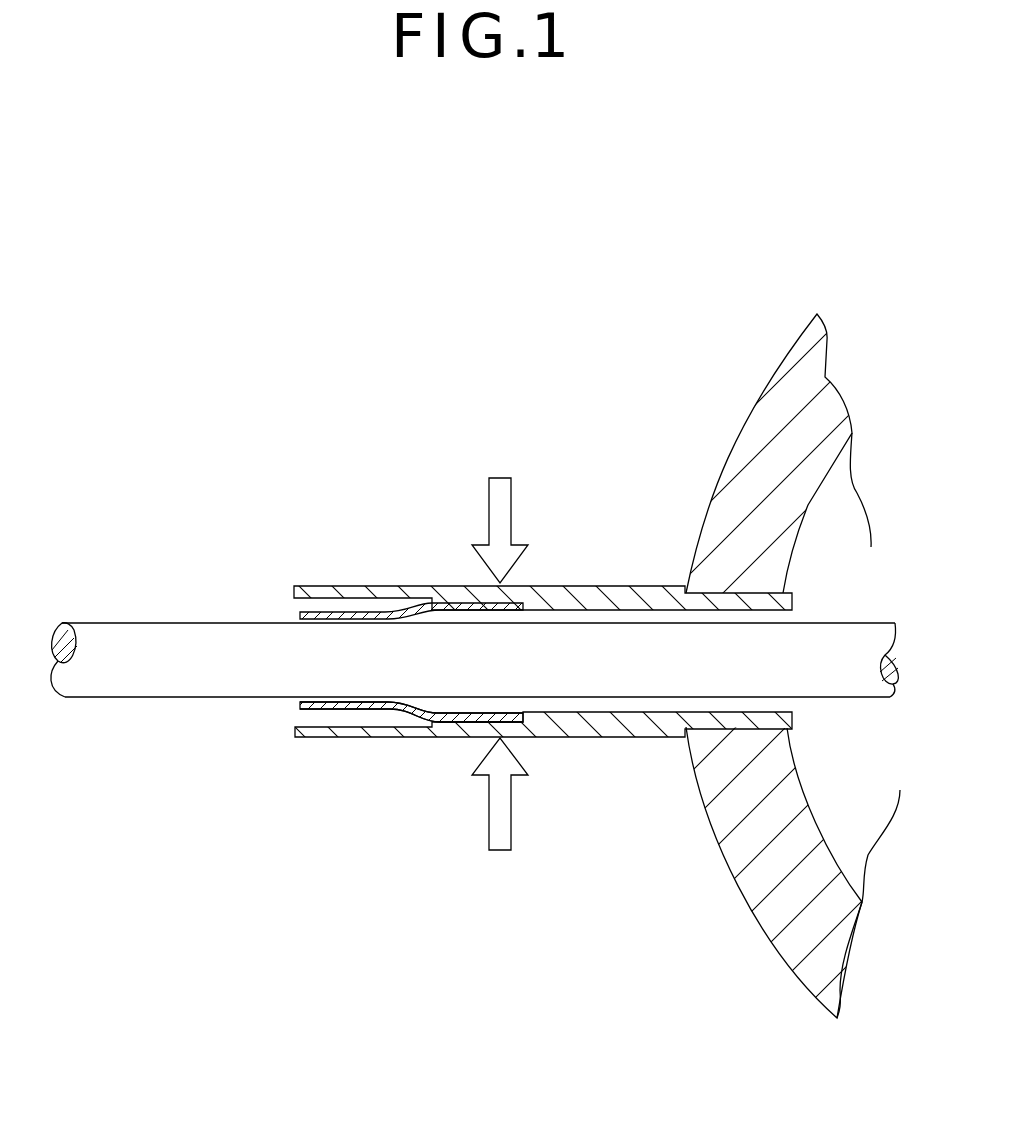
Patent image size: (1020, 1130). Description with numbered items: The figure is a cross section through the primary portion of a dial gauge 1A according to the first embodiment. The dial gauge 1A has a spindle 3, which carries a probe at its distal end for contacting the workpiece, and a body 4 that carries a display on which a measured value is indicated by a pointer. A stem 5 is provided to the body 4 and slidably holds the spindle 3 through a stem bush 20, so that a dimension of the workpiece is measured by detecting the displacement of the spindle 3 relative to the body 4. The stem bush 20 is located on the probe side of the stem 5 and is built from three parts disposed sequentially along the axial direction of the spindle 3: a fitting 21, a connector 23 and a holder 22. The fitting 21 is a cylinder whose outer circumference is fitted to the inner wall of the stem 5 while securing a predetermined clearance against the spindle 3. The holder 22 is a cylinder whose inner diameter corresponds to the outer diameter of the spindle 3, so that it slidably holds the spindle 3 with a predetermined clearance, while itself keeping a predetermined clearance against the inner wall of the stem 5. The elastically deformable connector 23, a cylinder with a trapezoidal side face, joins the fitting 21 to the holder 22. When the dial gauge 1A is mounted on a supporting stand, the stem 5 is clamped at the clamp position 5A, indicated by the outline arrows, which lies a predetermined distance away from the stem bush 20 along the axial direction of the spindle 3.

The dial gauge 1A is at (398, 503).
The spindle 3 is at (142, 690).
The body 4 is at (720, 468).
The stem 5 is at (652, 597).
The clamp position 5A is at (520, 510).
The stem bush 20 is at (335, 612).
The fitting 21 is at (463, 728).
The holder 22 is at (330, 710).
The connector 23 is at (404, 723).